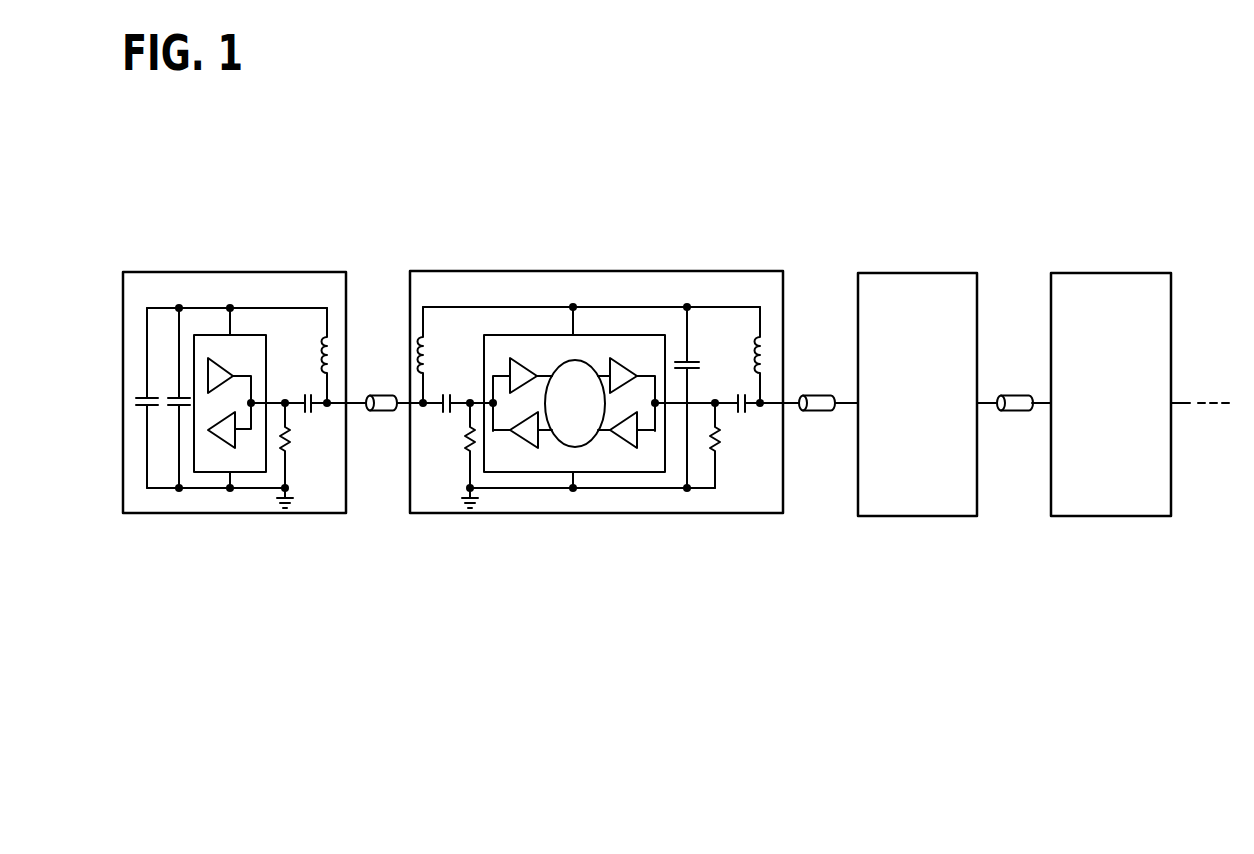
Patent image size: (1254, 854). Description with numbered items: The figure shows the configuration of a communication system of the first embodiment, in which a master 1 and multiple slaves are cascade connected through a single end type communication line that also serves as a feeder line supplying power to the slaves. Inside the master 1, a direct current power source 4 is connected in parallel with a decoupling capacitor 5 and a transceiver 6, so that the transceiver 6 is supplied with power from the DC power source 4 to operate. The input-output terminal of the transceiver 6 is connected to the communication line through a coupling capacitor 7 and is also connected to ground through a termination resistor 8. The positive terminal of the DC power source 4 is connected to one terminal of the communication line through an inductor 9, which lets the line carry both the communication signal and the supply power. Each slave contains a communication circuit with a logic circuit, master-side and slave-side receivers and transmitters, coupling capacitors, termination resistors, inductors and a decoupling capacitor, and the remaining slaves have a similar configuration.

The master 1 is at (235, 272).
The DC power source 4 is at (146, 396).
The decoupling capacitor 5 is at (178, 396).
The transceiver 6 is at (243, 335).
The coupling capacitor 7 is at (306, 412).
The termination resistor 8 is at (291, 446).
The inductor 9 is at (320, 355).